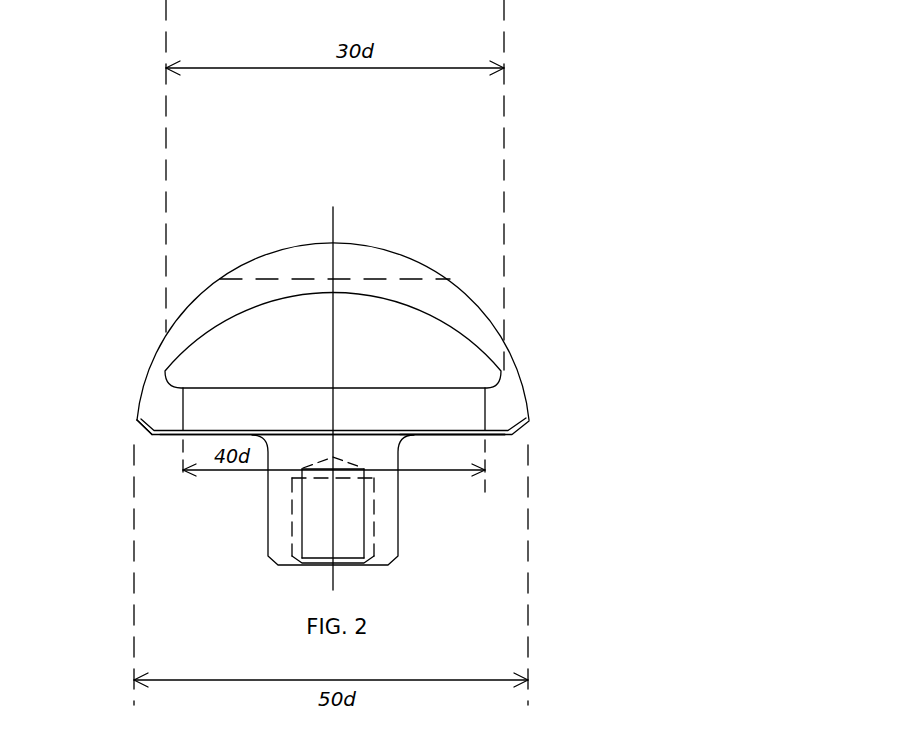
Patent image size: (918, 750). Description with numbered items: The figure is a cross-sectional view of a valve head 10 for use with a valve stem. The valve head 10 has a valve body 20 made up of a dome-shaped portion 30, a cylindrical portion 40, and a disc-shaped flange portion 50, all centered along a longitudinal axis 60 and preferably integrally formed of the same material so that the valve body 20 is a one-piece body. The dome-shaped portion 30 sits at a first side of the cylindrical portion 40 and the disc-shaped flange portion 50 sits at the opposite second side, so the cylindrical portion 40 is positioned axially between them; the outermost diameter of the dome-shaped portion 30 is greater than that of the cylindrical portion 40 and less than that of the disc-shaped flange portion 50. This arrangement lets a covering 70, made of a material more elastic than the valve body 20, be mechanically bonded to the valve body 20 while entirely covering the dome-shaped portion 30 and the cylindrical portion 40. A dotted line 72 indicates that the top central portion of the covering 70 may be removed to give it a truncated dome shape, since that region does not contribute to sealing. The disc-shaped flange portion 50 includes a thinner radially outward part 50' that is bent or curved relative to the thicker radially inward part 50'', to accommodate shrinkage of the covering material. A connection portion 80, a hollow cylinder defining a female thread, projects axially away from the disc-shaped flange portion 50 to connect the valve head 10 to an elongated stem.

The valve head 10 is at (529, 299).
The valve body 20 is at (448, 437).
The dome-shaped portion 30 is at (429, 316).
The cylindrical portion 40 is at (485, 412).
The disc-shaped flange portion 50 is at (379, 455).
The thinner radially outward part 50' is at (452, 505).
The thicker radially inward part 50'' is at (107, 473).
The longitudinal axis 60 is at (334, 216).
The covering 70 is at (166, 322).
The dotted line 72 is at (278, 279).
The connection portion 80 is at (268, 490).